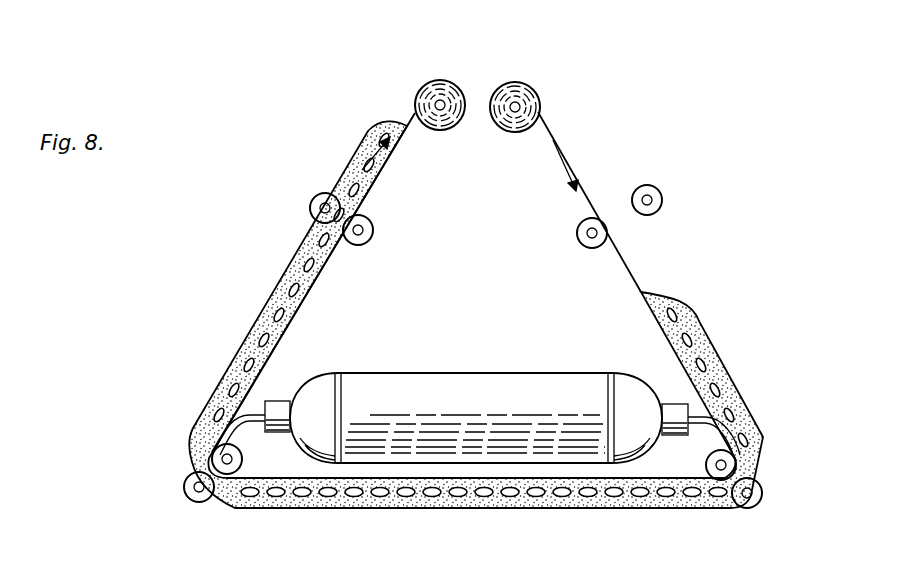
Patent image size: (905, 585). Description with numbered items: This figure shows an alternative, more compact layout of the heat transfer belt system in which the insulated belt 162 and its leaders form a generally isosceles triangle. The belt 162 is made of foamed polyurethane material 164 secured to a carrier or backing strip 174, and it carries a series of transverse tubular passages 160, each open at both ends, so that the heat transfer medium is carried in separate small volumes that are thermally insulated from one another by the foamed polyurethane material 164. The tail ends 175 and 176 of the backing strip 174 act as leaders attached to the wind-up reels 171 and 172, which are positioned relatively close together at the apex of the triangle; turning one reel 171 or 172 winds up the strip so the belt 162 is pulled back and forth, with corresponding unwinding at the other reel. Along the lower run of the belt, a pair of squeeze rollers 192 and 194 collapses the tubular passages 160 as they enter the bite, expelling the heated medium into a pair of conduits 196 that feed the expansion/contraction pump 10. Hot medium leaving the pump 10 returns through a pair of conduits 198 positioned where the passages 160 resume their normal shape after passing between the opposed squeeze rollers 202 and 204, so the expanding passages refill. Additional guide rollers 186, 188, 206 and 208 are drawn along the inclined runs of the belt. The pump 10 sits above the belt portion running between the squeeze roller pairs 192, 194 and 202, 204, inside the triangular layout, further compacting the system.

The expansion/contraction pump 10 is at (480, 370).
The tubular passages 160 is at (246, 365).
The insulated belt 162 is at (312, 302).
The foamed polyurethane material 164 is at (272, 298).
The reel 171 is at (440, 80).
The reel 172 is at (525, 84).
The backing strip 174 is at (484, 476).
The tail end 175 is at (414, 108).
The tail end 176 is at (573, 160).
The guide roller 186 is at (374, 232).
The guide roller 188 is at (309, 204).
The squeeze roller 192 is at (243, 458).
The squeeze roller 194 is at (191, 500).
The conduits 196 is at (262, 392).
The conduits 198 is at (702, 415).
The squeeze roller 202 is at (706, 467).
The squeeze roller 204 is at (752, 508).
The guide roller 206 is at (663, 199).
The guide roller 208 is at (578, 240).